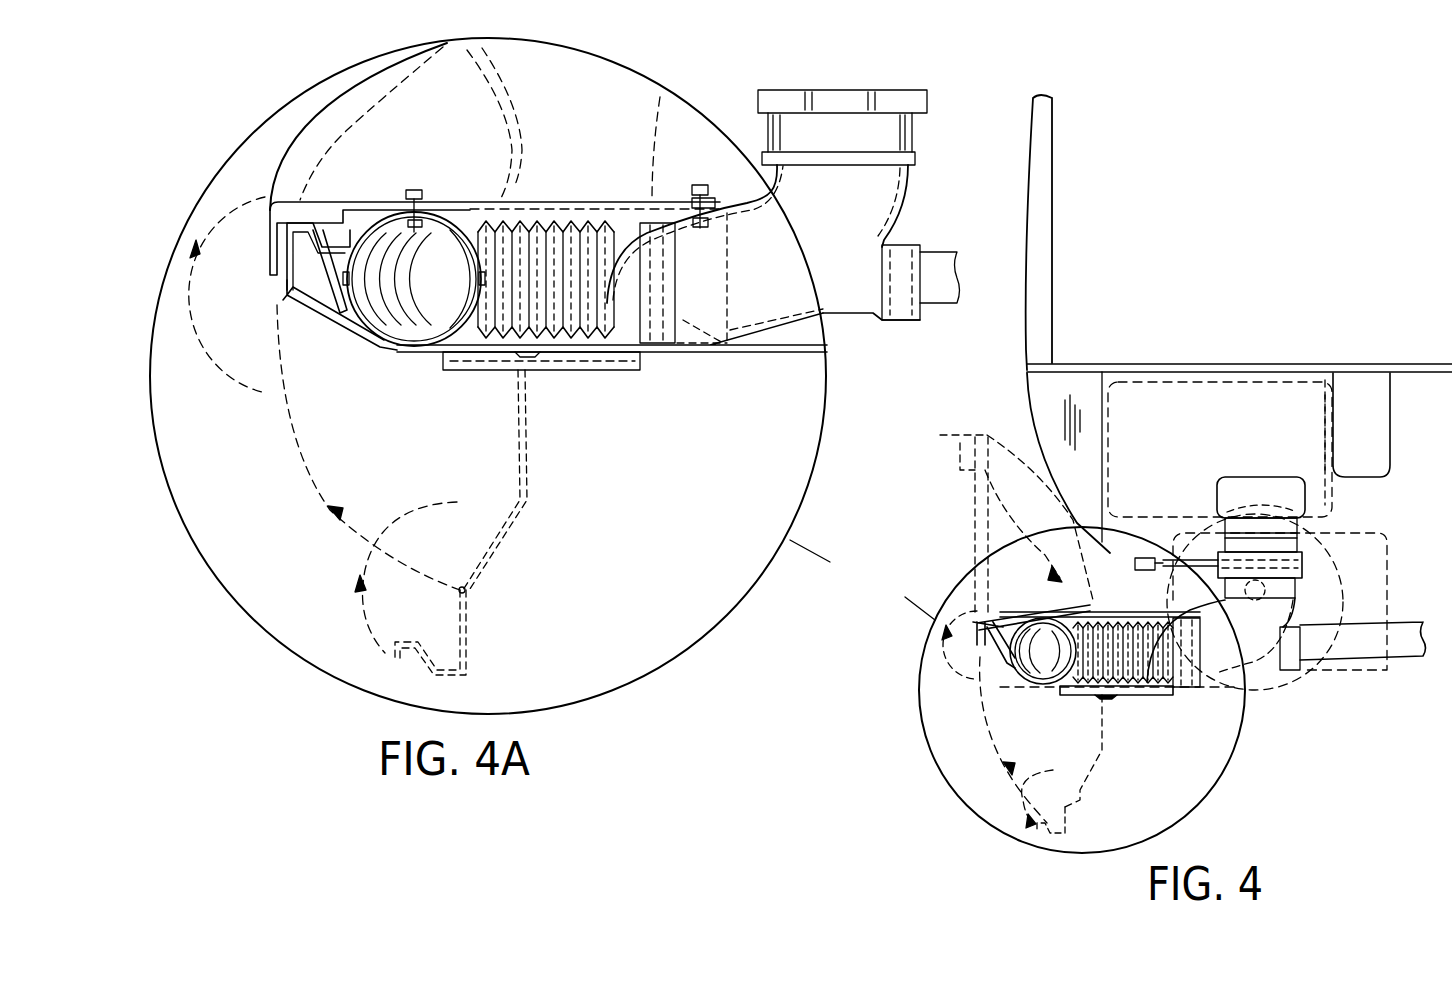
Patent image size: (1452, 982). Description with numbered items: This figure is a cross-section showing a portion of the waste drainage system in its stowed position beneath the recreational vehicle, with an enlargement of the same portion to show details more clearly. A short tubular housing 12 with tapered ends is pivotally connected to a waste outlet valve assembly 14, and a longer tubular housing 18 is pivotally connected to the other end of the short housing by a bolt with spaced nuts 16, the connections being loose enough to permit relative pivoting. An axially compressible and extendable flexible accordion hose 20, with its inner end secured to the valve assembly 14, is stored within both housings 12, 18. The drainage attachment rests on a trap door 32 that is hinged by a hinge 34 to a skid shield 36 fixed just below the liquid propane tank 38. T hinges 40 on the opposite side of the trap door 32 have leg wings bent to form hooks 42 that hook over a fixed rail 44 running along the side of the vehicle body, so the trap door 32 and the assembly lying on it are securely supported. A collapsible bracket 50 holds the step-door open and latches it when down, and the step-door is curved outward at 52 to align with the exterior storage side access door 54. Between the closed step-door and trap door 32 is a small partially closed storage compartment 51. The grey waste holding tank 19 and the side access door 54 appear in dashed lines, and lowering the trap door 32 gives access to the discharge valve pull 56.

In FIG. 4A, the short tubular housing 12 is at (568, 197).
In FIG. 4, the waste outlet valve assembly 14 is at (1300, 560).
In FIG. 4A, the bolt with spaced nuts 16 is at (415, 187).
In FIG. 4A, the longer tubular housing 18 is at (373, 232).
In FIG. 4, the grey waste holding tank 19 is at (1185, 385).
In FIG. 4A, the flexible accordion hose 20 is at (405, 290).
In FIG. 4A, the trap door 32 is at (393, 353).
In FIG. 4, the trap door 32 is at (1103, 750).
In FIG. 4A, the hinge 34 is at (520, 357).
In FIG. 4, the hinge 34 is at (1107, 690).
In FIG. 4A, the skid shield 36 is at (766, 352).
In FIG. 4, the liquid propane tank 38 is at (1192, 533).
In FIG. 4A, the T hinges 40 is at (305, 313).
In FIG. 4, the T hinges 40 is at (1080, 790).
In FIG. 4A, the hooks 42 is at (283, 278).
In FIG. 4, the hooks 42 is at (1065, 820).
In FIG. 4A, the fixed rail 44 is at (300, 247).
In FIG. 4, the collapsible bracket 50 is at (975, 497).
In FIG. 4A, the storage compartment 51 is at (350, 317).
In FIG. 4A, the curved outward portion 52 is at (305, 138).
In FIG. 4, the curved outward portion 52 is at (983, 585).
In FIG. 4, the exterior storage side access door 54 is at (1390, 590).
In FIG. 4, the discharge valve pull 56 is at (1140, 572).